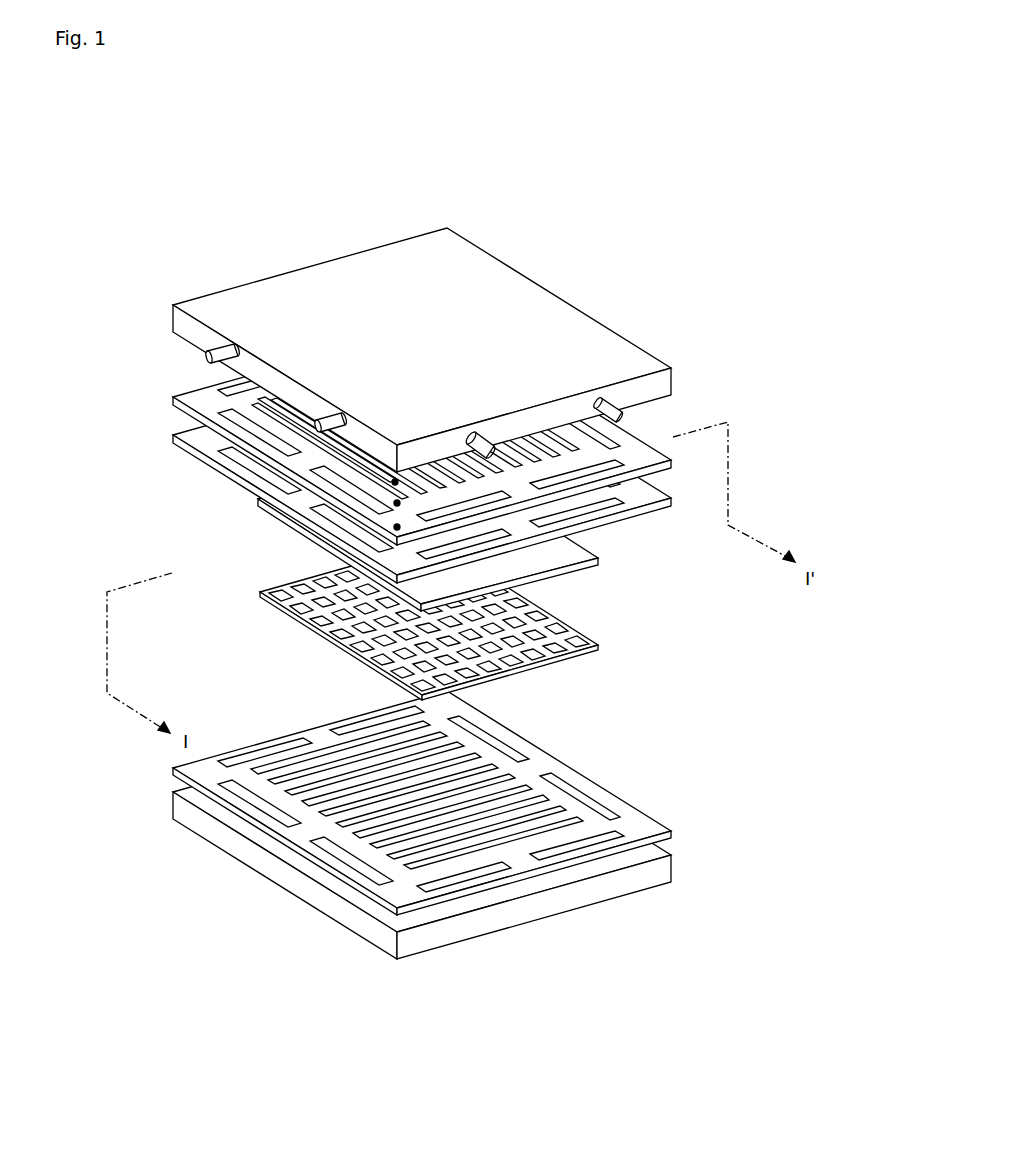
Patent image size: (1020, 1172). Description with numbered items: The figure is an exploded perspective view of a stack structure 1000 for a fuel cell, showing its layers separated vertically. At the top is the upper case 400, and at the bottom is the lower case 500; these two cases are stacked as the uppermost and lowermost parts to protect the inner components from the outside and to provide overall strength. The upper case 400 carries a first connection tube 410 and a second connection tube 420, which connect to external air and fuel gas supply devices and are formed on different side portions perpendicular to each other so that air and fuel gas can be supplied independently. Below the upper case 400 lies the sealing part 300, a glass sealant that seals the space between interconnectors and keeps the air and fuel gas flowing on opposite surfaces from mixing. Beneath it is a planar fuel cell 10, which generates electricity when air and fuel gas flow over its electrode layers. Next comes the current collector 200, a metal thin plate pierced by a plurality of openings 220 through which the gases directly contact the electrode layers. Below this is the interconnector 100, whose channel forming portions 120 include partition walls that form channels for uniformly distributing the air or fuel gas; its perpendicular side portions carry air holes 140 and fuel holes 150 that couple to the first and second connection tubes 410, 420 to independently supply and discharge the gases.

The stack structure 1000 is at (460, 98).
The upper case 400 is at (550, 317).
The second connection tube 420 is at (222, 347).
The first connection tube 410 is at (620, 404).
The sealing part 300 is at (170, 433).
The fuel cell 10 is at (597, 545).
The openings 220 is at (293, 582).
The current collector 200 is at (595, 638).
The interconnector 100 is at (460, 803).
The channel forming portions 120 is at (327, 812).
The fuel holes 150 is at (632, 818).
The air holes 140 is at (615, 845).
The lower case 500 is at (487, 923).